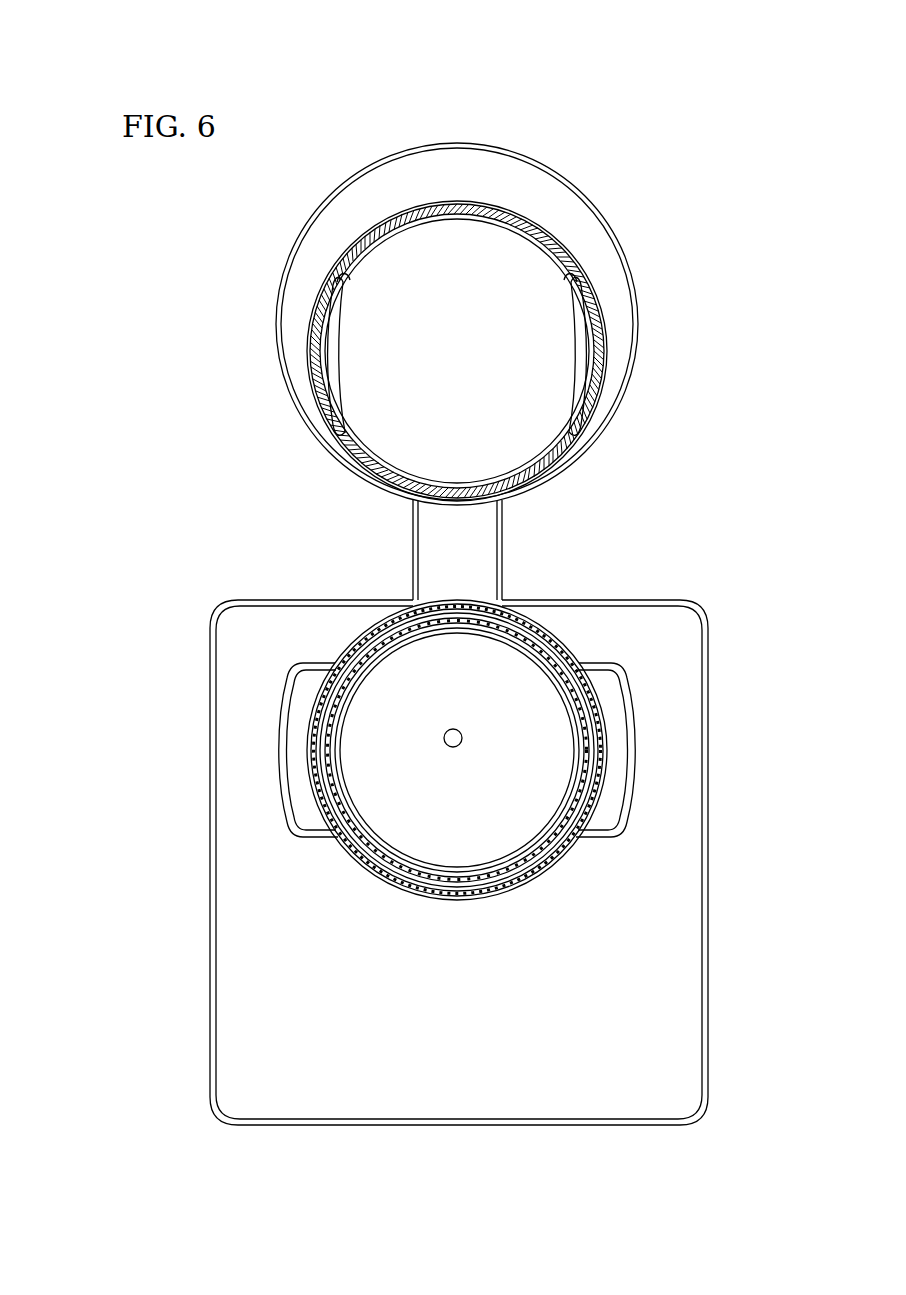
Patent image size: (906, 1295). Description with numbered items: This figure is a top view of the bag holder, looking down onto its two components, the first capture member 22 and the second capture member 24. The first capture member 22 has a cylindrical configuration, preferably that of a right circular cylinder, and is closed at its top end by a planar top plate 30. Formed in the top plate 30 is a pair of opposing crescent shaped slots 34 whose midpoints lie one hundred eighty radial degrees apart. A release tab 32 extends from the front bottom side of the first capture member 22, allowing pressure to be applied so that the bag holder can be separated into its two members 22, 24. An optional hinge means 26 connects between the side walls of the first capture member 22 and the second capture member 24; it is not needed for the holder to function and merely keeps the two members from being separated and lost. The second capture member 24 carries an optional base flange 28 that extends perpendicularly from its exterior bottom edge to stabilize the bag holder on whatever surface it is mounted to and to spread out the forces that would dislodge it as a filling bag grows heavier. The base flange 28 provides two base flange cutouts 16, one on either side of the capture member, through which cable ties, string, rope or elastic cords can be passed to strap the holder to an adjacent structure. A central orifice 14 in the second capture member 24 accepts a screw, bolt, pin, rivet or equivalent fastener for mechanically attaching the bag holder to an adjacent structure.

The central orifice 14 is at (462, 735).
The base flange cutouts 16 is at (608, 810).
The first capture member 22 is at (232, 328).
The second capture member 24 is at (382, 798).
The hinge means 26 is at (425, 548).
The base flange 28 is at (440, 1100).
The planar top plate 30 is at (518, 258).
The release tab 32 is at (427, 163).
The crescent shaped slots 34 is at (593, 348).